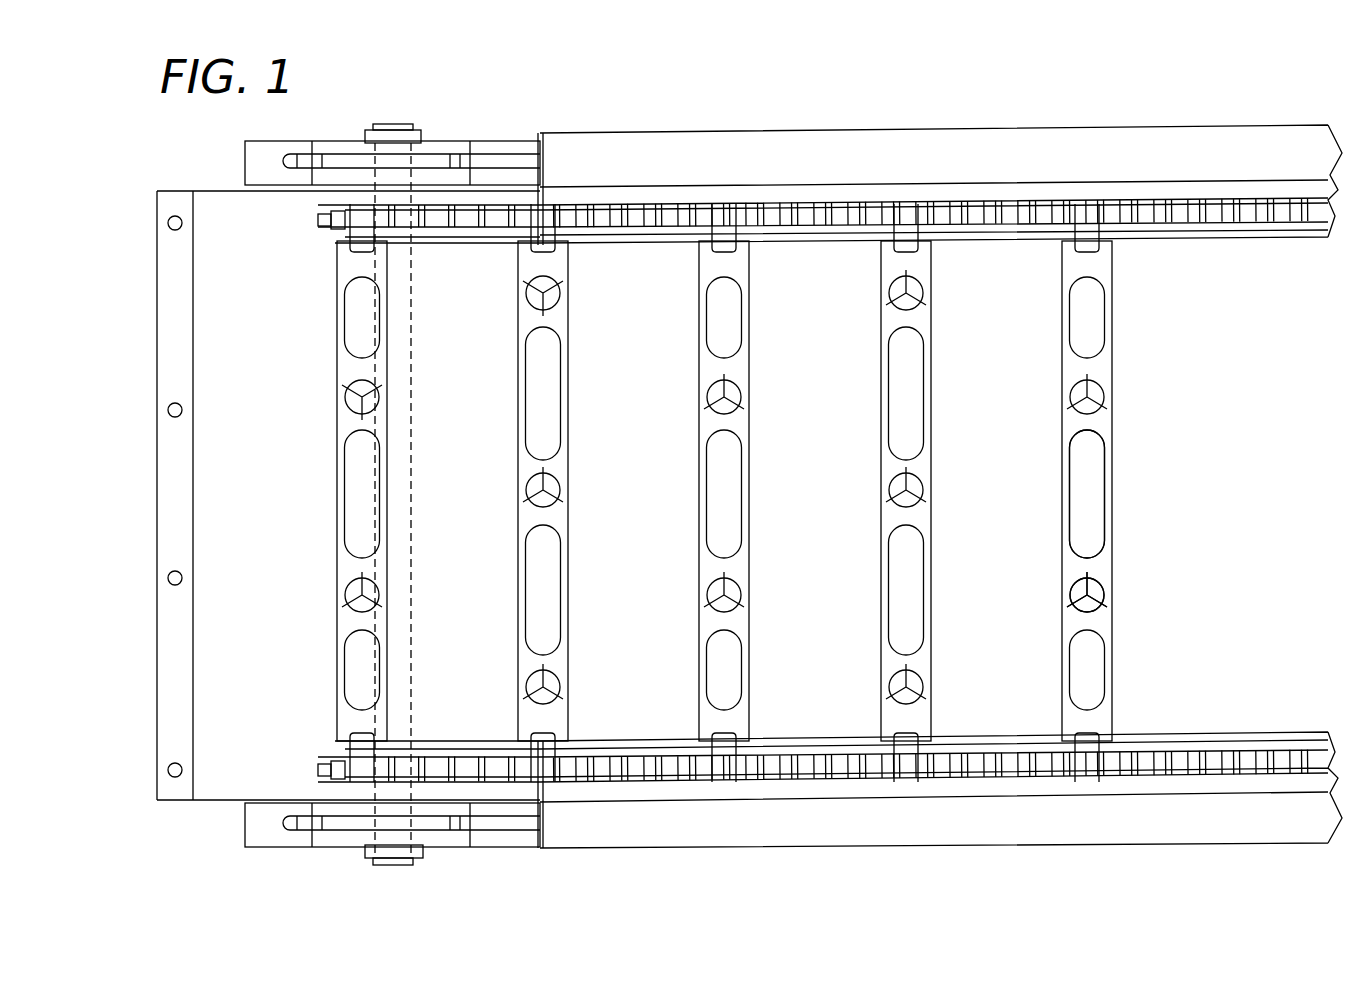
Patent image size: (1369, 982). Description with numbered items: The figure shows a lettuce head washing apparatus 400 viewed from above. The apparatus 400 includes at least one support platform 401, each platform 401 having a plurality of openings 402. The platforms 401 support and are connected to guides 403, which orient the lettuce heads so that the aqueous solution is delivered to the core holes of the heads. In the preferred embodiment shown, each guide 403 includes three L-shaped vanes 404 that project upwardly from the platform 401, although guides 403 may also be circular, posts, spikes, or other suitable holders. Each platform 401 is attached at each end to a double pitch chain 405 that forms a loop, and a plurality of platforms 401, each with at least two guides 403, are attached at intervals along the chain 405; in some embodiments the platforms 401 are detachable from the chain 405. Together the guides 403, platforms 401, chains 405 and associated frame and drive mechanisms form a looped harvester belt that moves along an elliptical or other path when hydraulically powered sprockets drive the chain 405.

The lettuce head washing apparatus 400 is at (855, 850).
The support platform 401 is at (1113, 300).
The openings 402 is at (1080, 480).
The guide 403 is at (1100, 580).
The L-shaped vanes 404 is at (343, 397).
The double pitch chain 405 is at (485, 198).